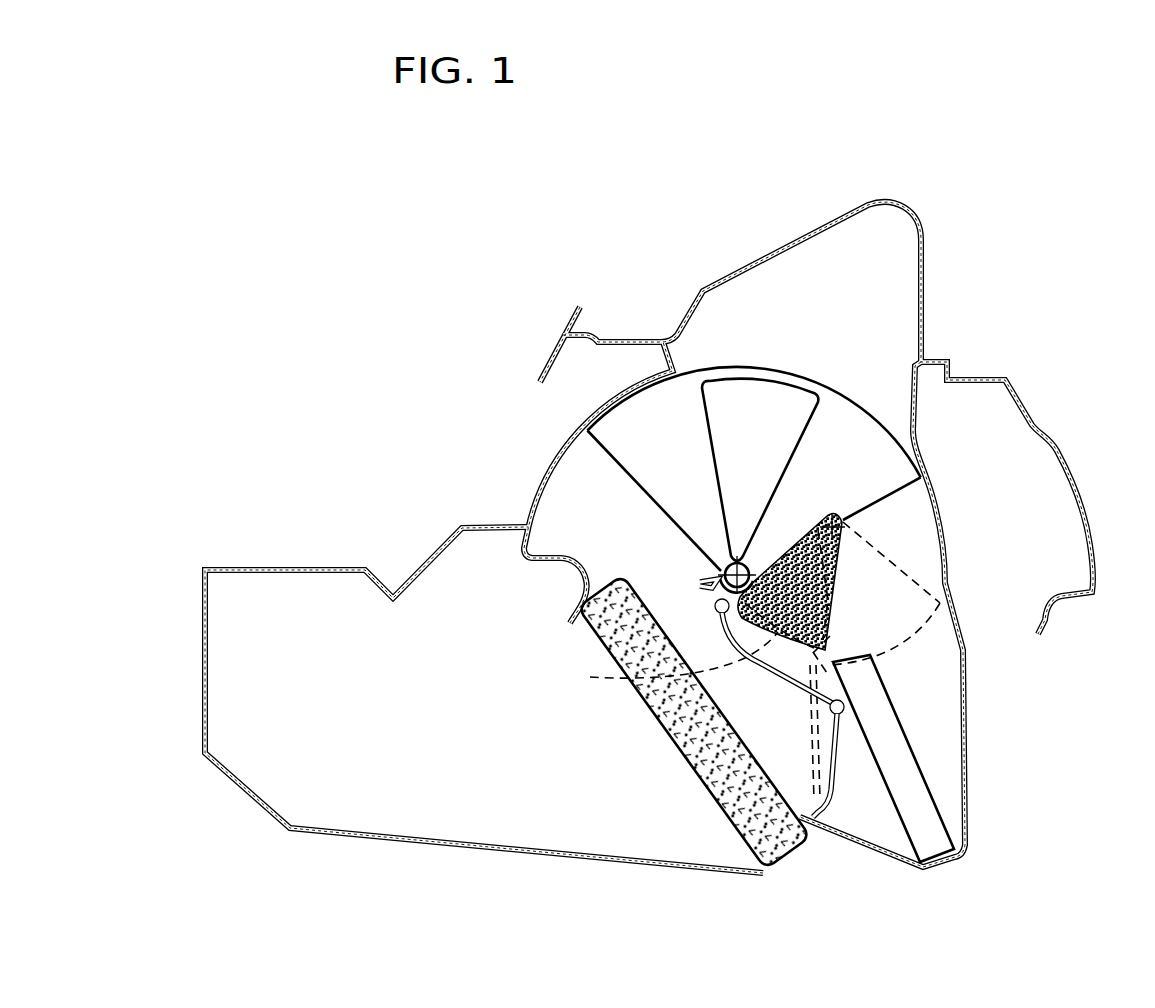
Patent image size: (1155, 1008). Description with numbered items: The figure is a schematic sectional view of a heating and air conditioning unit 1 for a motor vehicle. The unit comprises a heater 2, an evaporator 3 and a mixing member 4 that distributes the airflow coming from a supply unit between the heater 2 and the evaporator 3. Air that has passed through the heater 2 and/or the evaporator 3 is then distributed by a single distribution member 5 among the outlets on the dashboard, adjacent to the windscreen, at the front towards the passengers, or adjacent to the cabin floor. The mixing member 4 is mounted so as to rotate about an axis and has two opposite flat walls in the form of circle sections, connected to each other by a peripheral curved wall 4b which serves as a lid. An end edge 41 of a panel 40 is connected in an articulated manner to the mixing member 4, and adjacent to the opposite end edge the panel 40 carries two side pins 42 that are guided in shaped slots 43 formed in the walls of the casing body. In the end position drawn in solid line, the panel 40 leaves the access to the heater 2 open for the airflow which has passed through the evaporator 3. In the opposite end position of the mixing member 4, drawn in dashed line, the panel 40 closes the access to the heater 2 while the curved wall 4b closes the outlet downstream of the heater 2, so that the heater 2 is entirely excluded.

The heating and air conditioning unit 1 is at (375, 320).
The heater 2 is at (927, 765).
The evaporator 3 is at (675, 757).
The mixing member 4 is at (838, 598).
The peripheral curved wall 4b is at (661, 666).
The distribution member 5 is at (612, 464).
The panel 40 is at (773, 670).
The end edge 41 is at (717, 622).
The side pins 42 is at (843, 703).
The shaped slots 43 is at (833, 787).